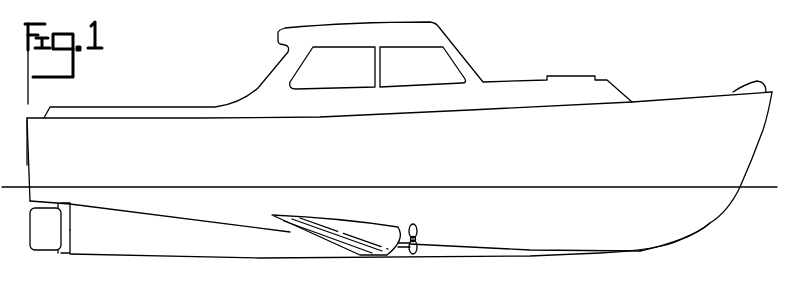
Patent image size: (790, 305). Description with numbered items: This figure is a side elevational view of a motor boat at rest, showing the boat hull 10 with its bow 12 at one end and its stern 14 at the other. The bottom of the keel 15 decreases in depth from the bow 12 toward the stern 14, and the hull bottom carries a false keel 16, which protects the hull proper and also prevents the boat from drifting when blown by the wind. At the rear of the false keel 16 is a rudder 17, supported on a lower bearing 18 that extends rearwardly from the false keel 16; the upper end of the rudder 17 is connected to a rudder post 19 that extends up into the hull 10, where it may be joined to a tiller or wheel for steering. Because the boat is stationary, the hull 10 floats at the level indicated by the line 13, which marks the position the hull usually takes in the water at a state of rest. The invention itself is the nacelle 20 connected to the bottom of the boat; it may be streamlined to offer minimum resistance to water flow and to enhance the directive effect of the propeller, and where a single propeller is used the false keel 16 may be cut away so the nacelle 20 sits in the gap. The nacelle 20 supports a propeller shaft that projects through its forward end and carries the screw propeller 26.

The boat hull 10 is at (389, 158).
The bow 12 is at (759, 138).
The line 13 is at (757, 190).
The stern 14 is at (28, 148).
The keel 15 is at (166, 214).
The false keel 16 is at (143, 257).
The rudder 17 is at (55, 247).
The lower bearing 18 is at (59, 258).
The rudder post 19 is at (60, 204).
The nacelle 20 is at (372, 234).
The screw propeller 26 is at (420, 229).